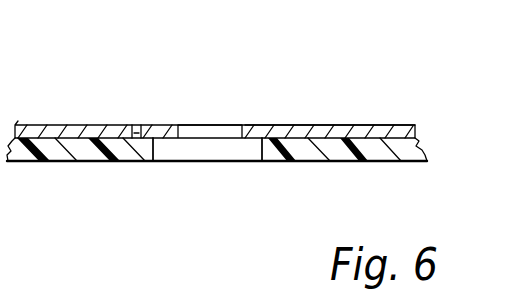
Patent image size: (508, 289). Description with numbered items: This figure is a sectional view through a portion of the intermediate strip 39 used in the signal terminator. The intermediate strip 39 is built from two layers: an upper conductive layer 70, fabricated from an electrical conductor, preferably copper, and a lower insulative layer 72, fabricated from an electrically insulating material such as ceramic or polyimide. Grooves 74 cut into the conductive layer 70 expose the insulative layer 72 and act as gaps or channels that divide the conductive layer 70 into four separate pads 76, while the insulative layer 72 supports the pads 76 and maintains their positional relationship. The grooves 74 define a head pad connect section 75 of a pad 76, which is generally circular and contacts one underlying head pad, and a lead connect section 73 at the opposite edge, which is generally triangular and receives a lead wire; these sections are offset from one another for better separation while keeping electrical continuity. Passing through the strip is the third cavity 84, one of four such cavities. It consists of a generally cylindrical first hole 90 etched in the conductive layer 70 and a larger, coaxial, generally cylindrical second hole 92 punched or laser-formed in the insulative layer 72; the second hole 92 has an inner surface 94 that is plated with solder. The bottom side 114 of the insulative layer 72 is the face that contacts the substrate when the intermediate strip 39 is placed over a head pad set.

The conductive layer 70 is at (413, 135).
The insulative layer 72 is at (410, 161).
The groove 74 is at (134, 133).
The head pad connect section 75 is at (226, 115).
The pad 76 is at (337, 125).
The intermediate strip 39 is at (303, 110).
The first hole 90 is at (202, 125).
The second hole 92 is at (165, 162).
The third cavity 84 is at (227, 150).
The inner surface 94 is at (263, 150).
The bottom side 114 is at (55, 162).
The lead connect section 73 is at (82, 278).